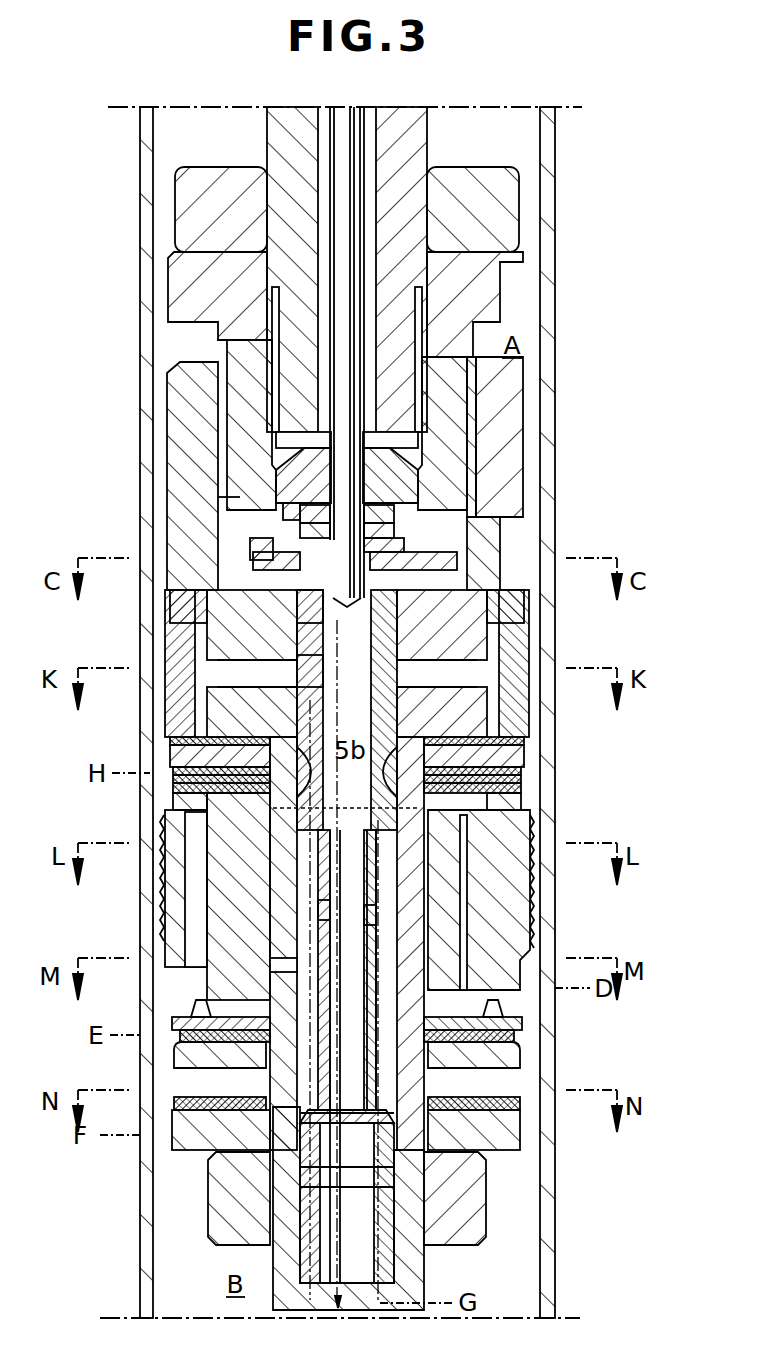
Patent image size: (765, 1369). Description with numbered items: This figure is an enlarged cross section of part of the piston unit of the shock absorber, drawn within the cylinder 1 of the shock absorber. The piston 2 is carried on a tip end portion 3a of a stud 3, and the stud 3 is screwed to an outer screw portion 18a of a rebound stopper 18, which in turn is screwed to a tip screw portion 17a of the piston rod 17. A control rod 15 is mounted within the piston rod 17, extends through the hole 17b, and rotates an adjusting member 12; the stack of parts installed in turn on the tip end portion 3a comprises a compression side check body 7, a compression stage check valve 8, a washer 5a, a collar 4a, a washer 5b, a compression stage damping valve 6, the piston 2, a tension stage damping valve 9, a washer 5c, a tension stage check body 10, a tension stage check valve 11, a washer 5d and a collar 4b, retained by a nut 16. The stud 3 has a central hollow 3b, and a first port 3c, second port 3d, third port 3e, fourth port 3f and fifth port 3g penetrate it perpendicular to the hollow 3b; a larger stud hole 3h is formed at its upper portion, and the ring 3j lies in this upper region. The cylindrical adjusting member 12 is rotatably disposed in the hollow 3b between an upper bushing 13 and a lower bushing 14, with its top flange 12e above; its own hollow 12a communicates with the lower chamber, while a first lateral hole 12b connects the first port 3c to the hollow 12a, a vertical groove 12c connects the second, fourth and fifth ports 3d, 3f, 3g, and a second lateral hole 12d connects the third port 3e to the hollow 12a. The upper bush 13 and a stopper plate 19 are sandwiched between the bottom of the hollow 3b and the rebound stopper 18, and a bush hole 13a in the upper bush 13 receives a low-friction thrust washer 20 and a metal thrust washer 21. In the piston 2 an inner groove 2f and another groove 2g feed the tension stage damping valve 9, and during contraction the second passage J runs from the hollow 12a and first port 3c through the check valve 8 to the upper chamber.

The outer tube 1 is at (555, 196).
The piston 2 is at (505, 899).
The inner groove 2f is at (494, 1008).
The groove 2g is at (260, 1002).
The stud 3 is at (503, 372).
The tip end portion 3a is at (300, 879).
The hollow 3b is at (533, 877).
The first port 3c is at (433, 668).
The second port 3d is at (297, 847).
The third port 3e is at (432, 830).
The fourth port 3f is at (297, 966).
The fifth port 3g is at (290, 1180).
The stud hole 3h is at (263, 497).
The ring 3j is at (447, 543).
The collar 4a is at (178, 754).
The collar 4b is at (520, 1142).
The washer 5a is at (514, 757).
The washer 5b is at (367, 773).
The washer 5c is at (250, 1057).
The washer 5d is at (236, 1150).
The compression stage damping valve 6 is at (174, 784).
The compression side check body 7 is at (513, 634).
The compression stage check valve 8 is at (176, 743).
The tension stage damping valve 9 is at (520, 1042).
The tension stage check body 10 is at (520, 1068).
The tension stage check valve 11 is at (521, 1100).
The adjusting member 12 is at (403, 625).
The hollow 12a is at (330, 628).
The first lateral hole 12b is at (272, 665).
The vertical groove 12c is at (300, 907).
The second lateral hole 12d is at (383, 920).
The spool top flange 12e is at (400, 574).
The upper bushing 13 is at (396, 488).
The bush hole 13a is at (393, 547).
The lower bushing 14 is at (395, 1268).
The control rod 15 is at (355, 136).
The nut 16 is at (220, 1204).
The piston rod 17 is at (263, 132).
The tip screw portion 17a is at (218, 357).
The hole 17b is at (318, 226).
The rebound stopper 18 is at (490, 296).
The outer screw portion 18a is at (468, 396).
The stopper plate 19 is at (247, 556).
The low-friction thrust washer 20 is at (394, 510).
The metal thrust washer 21 is at (300, 514).
The second passage J is at (200, 685).